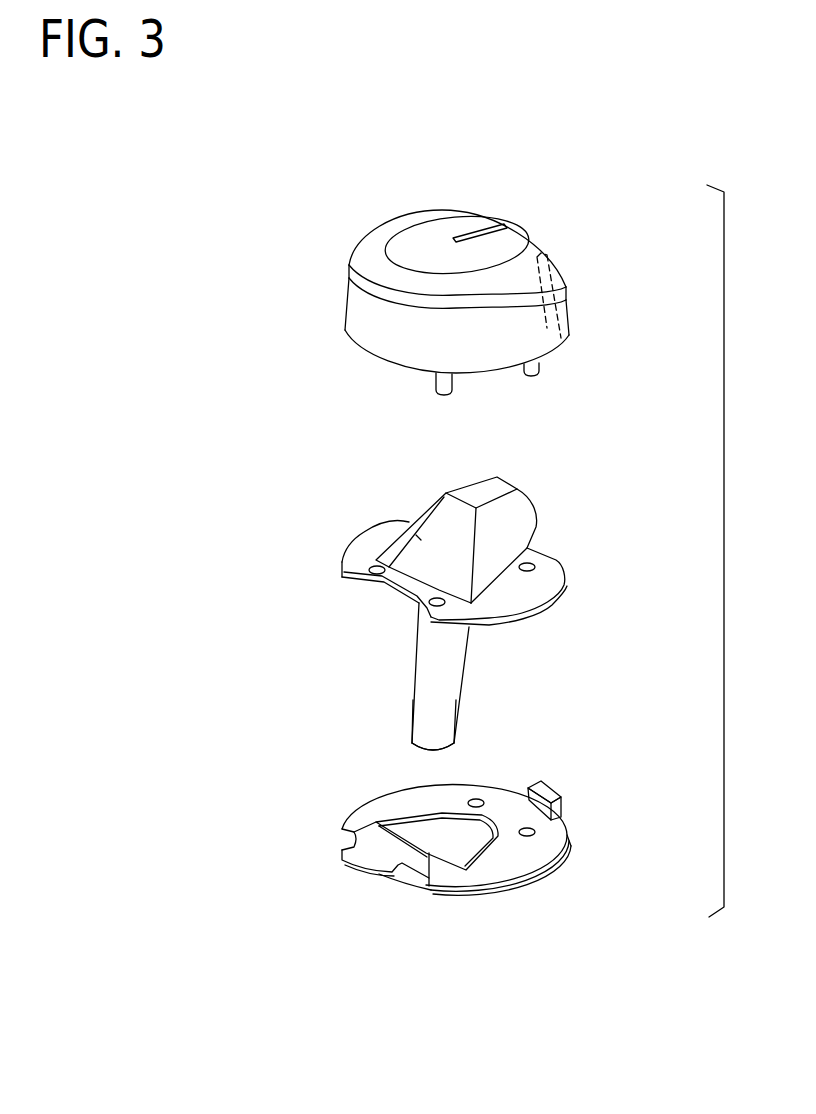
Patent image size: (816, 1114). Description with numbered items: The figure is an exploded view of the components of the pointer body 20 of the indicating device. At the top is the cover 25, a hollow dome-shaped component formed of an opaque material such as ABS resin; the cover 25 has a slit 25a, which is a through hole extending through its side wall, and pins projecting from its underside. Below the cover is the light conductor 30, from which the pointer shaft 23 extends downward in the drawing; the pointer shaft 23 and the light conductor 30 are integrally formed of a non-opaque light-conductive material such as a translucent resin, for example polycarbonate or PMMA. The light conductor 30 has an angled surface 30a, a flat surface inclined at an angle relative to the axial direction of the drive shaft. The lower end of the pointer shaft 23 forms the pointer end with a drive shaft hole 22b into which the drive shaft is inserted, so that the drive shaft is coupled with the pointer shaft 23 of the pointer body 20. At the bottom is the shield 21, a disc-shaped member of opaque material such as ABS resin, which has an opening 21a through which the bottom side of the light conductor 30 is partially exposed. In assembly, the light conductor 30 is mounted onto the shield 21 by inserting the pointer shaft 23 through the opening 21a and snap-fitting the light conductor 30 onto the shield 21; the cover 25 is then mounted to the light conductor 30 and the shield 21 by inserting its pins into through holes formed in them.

The pointer body 20 is at (768, 567).
The shield 21 is at (431, 852).
The opening 21a is at (412, 826).
The drive shaft hole 22b is at (450, 735).
The pointer shaft 23 is at (462, 673).
The cover 25 is at (385, 197).
The slit 25a is at (563, 307).
The light conductor 30 is at (424, 550).
The angled surface 30a is at (400, 519).